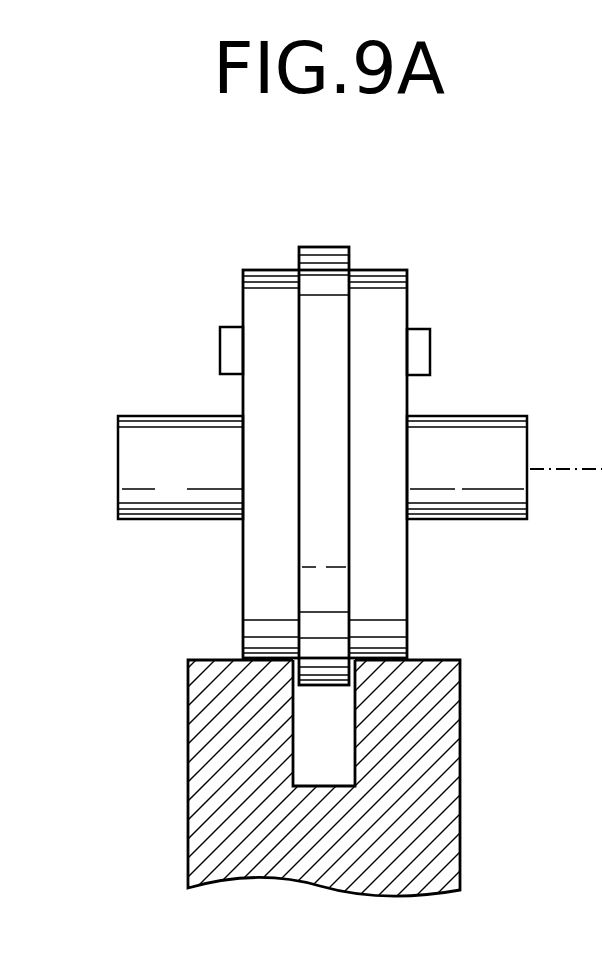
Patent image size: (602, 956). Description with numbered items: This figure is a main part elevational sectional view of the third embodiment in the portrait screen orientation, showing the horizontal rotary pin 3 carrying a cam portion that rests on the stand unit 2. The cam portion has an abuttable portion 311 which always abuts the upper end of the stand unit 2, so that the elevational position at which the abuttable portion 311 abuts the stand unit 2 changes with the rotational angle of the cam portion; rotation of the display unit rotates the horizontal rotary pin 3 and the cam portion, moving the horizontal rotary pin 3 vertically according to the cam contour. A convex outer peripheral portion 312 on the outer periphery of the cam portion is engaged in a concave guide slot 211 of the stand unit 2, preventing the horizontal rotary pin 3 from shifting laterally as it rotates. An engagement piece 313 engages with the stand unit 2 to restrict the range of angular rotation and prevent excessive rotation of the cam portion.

The stand unit 2 is at (437, 815).
The horizontal rotary pin 3 is at (133, 463).
The concave guide slot 211 is at (340, 735).
The abuttable portion 311 is at (384, 271).
The convex outer peripheral portion 312 is at (330, 597).
The engagement piece 313 is at (420, 348).